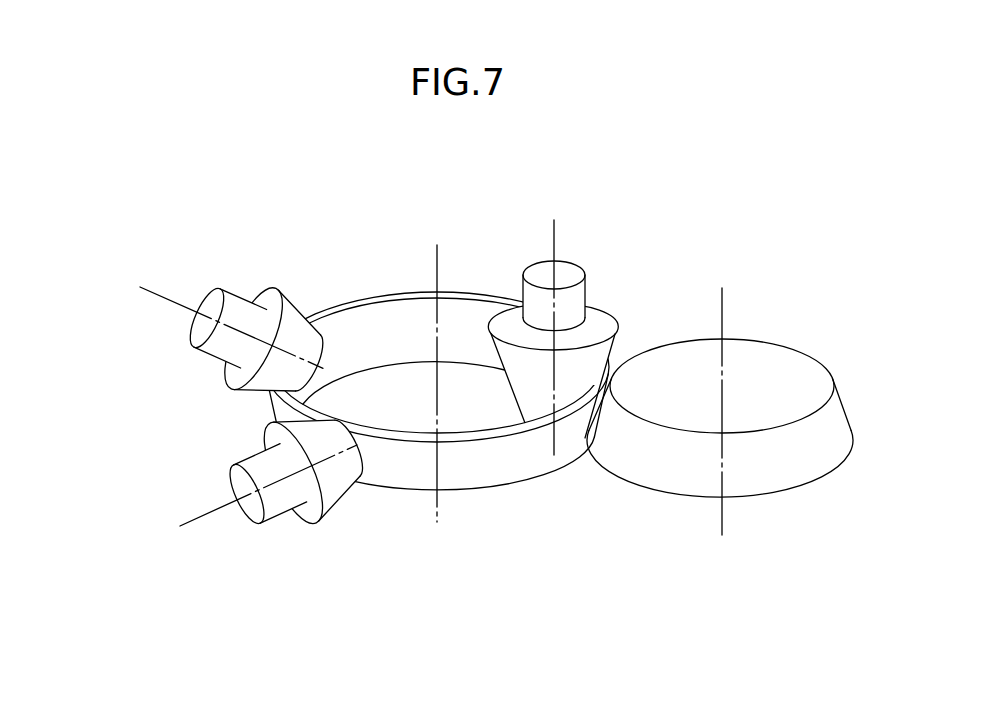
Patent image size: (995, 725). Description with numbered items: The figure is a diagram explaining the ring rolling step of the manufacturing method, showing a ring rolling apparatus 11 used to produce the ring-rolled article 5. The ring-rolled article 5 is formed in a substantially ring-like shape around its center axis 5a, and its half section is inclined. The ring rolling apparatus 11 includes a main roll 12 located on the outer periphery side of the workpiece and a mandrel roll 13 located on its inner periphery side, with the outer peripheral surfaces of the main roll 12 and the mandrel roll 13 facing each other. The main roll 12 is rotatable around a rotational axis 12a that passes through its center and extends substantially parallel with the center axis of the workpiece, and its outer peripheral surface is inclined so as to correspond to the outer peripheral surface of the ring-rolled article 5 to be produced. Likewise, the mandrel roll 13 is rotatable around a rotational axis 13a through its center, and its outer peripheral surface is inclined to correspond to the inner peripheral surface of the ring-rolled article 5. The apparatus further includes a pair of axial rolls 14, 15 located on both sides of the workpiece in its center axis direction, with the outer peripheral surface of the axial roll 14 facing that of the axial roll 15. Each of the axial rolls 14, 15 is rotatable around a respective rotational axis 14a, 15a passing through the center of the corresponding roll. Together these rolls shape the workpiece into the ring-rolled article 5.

The ring-rolled article 5 is at (348, 301).
The center axis of the ring-rolled article 5a is at (436, 264).
The ring rolling apparatus 11 is at (455, 385).
The main roll 12 is at (777, 457).
The rotational axis of the main roll 12a is at (725, 308).
The mandrel roll 13 is at (523, 292).
The rotational axis of the mandrel roll 13a is at (555, 237).
The axial roll 14 is at (197, 302).
The rotational axis of the axial roll 14a is at (176, 305).
The axial roll 15 is at (244, 510).
The rotational axis of the axial roll 15a is at (210, 510).